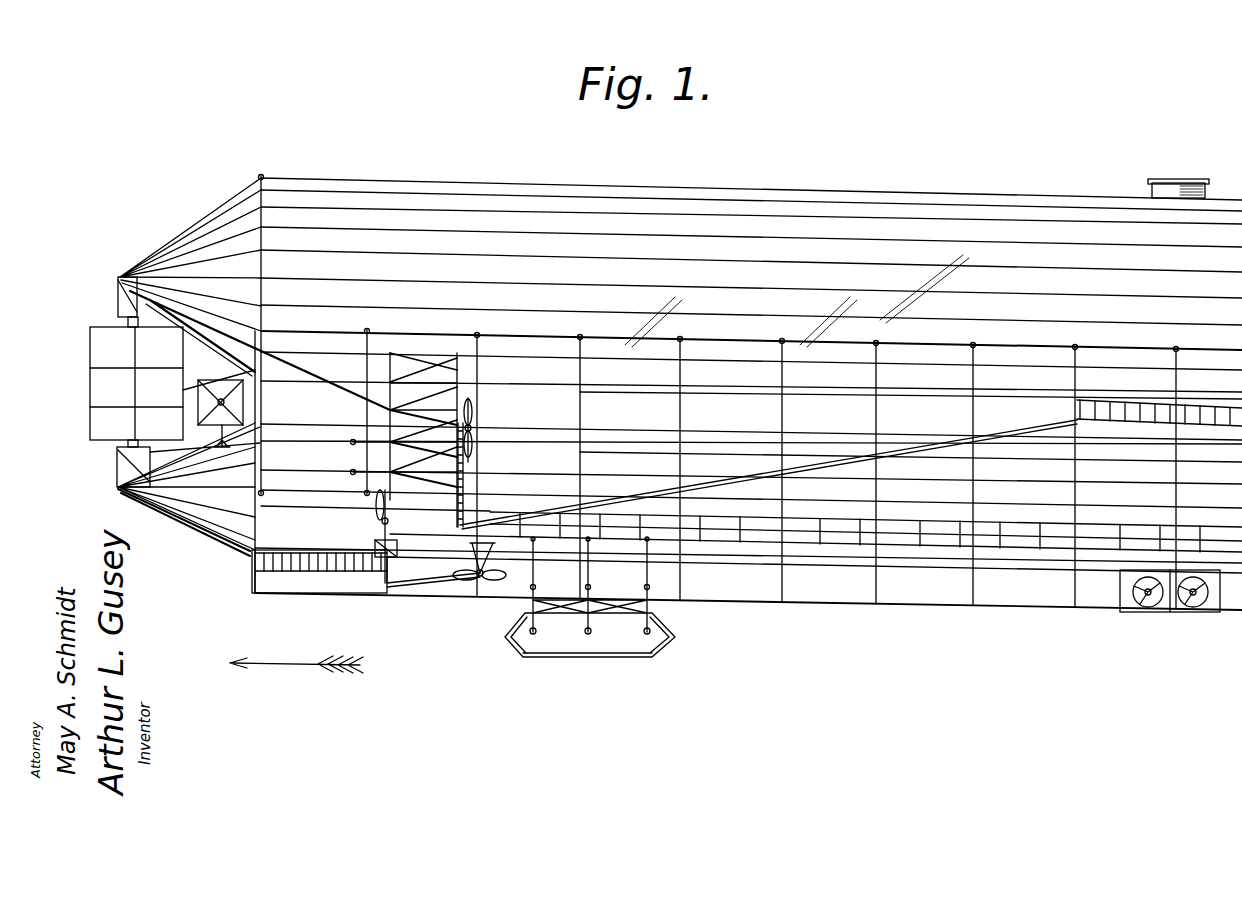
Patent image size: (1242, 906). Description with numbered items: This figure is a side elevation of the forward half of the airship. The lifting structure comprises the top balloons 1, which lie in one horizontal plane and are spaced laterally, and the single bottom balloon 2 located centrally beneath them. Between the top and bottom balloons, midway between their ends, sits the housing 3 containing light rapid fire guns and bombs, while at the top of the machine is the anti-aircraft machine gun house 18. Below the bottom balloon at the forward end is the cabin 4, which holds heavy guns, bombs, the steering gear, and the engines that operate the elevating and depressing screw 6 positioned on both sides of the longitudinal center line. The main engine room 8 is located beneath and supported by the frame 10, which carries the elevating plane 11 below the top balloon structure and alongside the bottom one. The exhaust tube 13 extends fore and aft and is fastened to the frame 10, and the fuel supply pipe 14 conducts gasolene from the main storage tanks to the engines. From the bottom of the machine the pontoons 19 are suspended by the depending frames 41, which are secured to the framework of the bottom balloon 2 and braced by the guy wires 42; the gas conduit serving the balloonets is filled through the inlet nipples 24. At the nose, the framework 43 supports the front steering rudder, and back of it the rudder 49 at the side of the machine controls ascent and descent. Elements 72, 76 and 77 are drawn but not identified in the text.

The top balloon 1 is at (796, 201).
The bottom balloon 2 is at (820, 451).
The housing 3 is at (1208, 412).
The cabin 4 is at (346, 589).
The elevating and depressing screw 6 is at (480, 581).
The main engine room 8 is at (440, 533).
The frame 10 is at (465, 477).
The elevating plane 11 is at (405, 385).
The exhaust tube 13 is at (893, 533).
The fuel supply pipe 14 is at (712, 489).
The anti-aircraft machine gun house 18 is at (1178, 184).
The pontoon 19 is at (640, 654).
The inlet nipple 24 is at (1160, 604).
The depending frame 41 is at (526, 612).
The guy wire 42 is at (645, 587).
The framework 43 is at (268, 351).
The rudder 49 is at (246, 402).
The auxiliary propellers 72 is at (474, 414).
The motor 76 is at (405, 560).
The rudder 77 is at (94, 422).